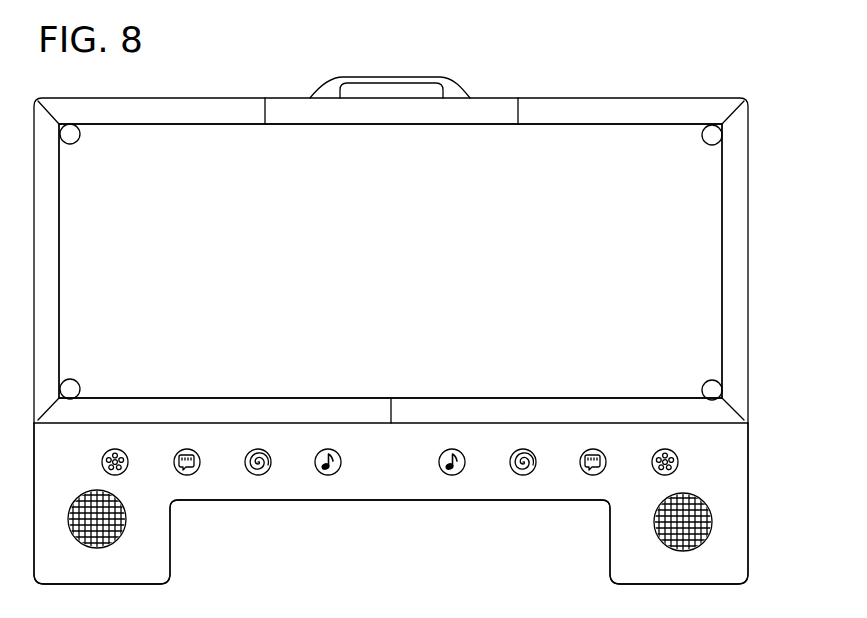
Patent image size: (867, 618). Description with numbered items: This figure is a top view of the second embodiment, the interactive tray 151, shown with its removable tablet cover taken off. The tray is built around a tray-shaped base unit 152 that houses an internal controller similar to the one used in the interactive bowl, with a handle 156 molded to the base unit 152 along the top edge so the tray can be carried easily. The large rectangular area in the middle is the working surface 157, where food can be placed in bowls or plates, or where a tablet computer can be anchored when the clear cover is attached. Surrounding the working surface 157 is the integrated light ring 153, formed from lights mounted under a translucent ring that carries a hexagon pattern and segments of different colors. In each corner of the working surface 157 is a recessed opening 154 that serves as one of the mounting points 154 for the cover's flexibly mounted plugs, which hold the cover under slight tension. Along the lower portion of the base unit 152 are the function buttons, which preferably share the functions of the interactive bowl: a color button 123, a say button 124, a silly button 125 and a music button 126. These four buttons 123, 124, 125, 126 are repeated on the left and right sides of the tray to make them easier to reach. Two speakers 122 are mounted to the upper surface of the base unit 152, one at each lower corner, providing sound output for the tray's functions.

The interactive tray 151 is at (629, 78).
The base unit 152 is at (738, 457).
The integrated light ring 153 is at (733, 252).
The mounting points 154 is at (76, 140).
The handle 156 is at (396, 77).
The working surface 157 is at (680, 198).
The speakers 122 is at (94, 530).
The color button 123 is at (124, 471).
The say button 124 is at (195, 471).
The silly button 125 is at (266, 471).
The music button 126 is at (336, 471).